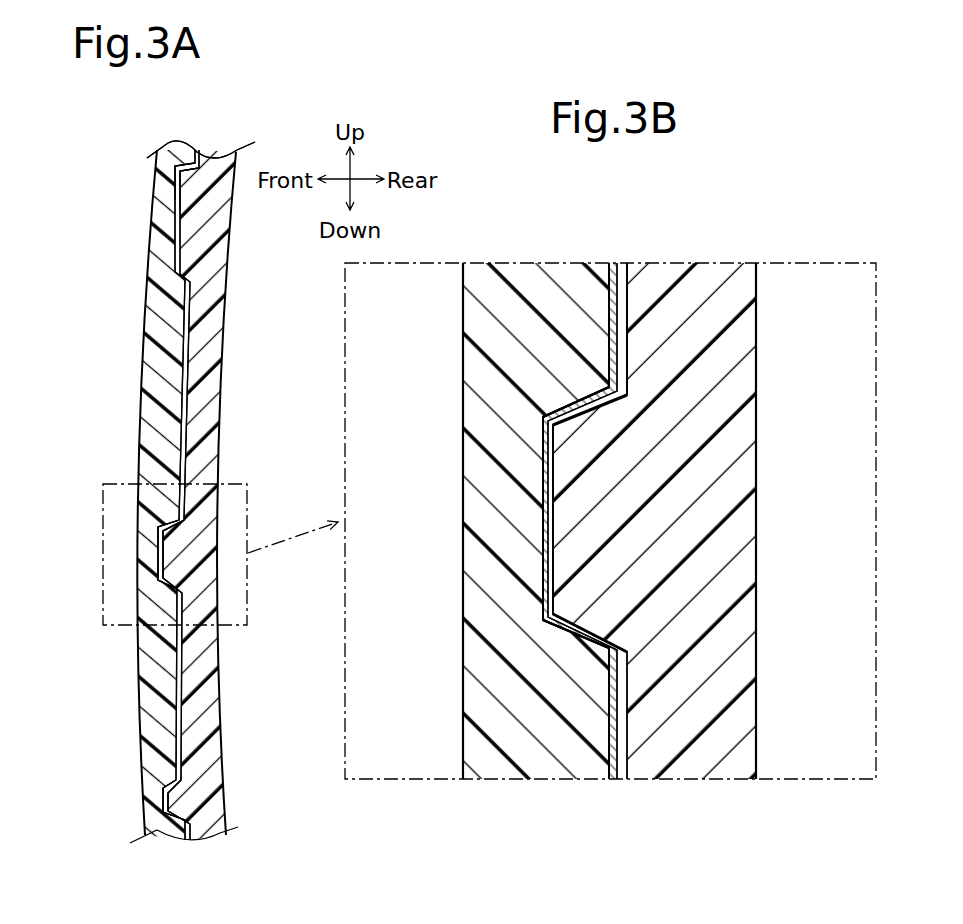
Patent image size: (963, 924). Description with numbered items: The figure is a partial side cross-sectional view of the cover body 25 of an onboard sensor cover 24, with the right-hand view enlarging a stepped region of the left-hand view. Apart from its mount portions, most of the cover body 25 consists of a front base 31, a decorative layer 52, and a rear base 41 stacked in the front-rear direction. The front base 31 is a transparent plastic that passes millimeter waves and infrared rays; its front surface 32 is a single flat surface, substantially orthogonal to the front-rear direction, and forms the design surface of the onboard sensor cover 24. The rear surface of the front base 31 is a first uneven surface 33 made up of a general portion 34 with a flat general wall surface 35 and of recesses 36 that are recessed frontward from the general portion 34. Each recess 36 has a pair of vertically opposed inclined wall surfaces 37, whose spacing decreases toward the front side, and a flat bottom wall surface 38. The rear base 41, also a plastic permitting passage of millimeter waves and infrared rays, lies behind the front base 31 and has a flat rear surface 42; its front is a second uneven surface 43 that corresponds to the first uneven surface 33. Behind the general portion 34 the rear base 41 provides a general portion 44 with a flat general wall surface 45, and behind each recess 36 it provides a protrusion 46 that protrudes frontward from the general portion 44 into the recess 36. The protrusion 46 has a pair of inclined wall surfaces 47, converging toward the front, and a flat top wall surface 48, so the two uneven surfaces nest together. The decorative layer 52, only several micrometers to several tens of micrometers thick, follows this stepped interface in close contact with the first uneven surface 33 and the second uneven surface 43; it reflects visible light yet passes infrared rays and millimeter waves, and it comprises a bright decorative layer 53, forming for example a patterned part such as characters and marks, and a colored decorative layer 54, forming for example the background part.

In FIG. 3A, the onboard sensor cover 24 is at (151, 201).
In FIG. 3B, the onboard sensor cover 24 is at (409, 521).
In FIG. 3A, the cover body 25 is at (110, 295).
In FIG. 3B, the cover body 25 is at (439, 346).
In FIG. 3A, the front base 31 is at (142, 421).
In FIG. 3B, the front base 31 is at (516, 275).
In FIG. 3A, the front surface 32 is at (157, 166).
In FIG. 3B, the front surface 32 is at (463, 272).
In FIG. 3B, the first uneven surface 33 is at (582, 292).
In FIG. 3A, the general portion 34 is at (172, 362).
In FIG. 3B, the general portion 34 is at (628, 333).
In FIG. 3B, the general wall surface 35 is at (611, 268).
In FIG. 3A, the recess 36 is at (190, 266).
In FIG. 3B, the recess 36 is at (589, 504).
In FIG. 3B, the inclined wall surface 37 is at (595, 412).
In FIG. 3B, the bottom wall surface 38 is at (552, 480).
In FIG. 3A, the rear base 41 is at (215, 442).
In FIG. 3B, the rear base 41 is at (720, 275).
In FIG. 3A, the rear surface 42 is at (238, 170).
In FIG. 3B, the rear surface 42 is at (757, 272).
In FIG. 3B, the second uneven surface 43 is at (660, 296).
In FIG. 3A, the general portion 44 is at (190, 375).
In FIG. 3B, the general portion 44 is at (617, 303).
In FIG. 3B, the general wall surface 45 is at (629, 268).
In FIG. 3A, the protrusion 46 is at (178, 205).
In FIG. 3B, the protrusion 46 is at (572, 538).
In FIG. 3B, the inclined wall surface 47 is at (548, 400).
In FIG. 3B, the top wall surface 48 is at (537, 580).
In FIG. 3A, the decorative layer 52 is at (195, 152).
In FIG. 3B, the decorative layer 52 is at (614, 577).
In FIG. 3B, the bright decorative layer 53 is at (578, 843).
In FIG. 3B, the colored decorative layer 54 is at (630, 372).